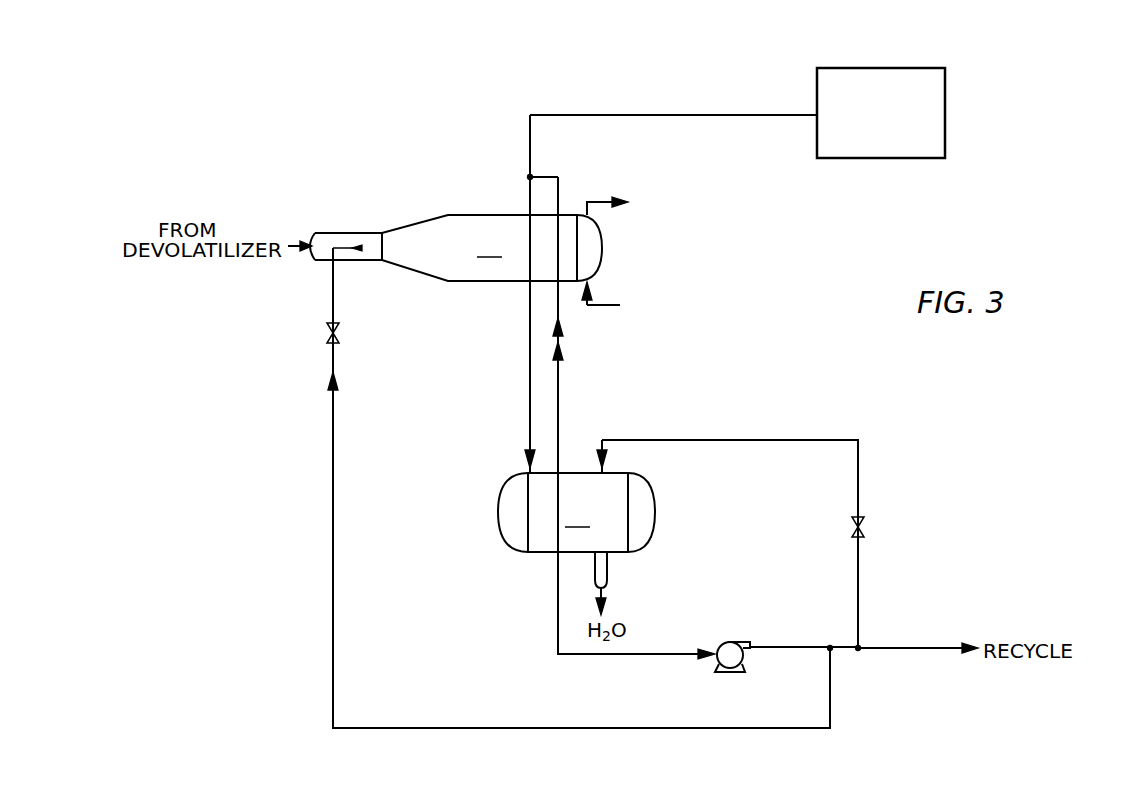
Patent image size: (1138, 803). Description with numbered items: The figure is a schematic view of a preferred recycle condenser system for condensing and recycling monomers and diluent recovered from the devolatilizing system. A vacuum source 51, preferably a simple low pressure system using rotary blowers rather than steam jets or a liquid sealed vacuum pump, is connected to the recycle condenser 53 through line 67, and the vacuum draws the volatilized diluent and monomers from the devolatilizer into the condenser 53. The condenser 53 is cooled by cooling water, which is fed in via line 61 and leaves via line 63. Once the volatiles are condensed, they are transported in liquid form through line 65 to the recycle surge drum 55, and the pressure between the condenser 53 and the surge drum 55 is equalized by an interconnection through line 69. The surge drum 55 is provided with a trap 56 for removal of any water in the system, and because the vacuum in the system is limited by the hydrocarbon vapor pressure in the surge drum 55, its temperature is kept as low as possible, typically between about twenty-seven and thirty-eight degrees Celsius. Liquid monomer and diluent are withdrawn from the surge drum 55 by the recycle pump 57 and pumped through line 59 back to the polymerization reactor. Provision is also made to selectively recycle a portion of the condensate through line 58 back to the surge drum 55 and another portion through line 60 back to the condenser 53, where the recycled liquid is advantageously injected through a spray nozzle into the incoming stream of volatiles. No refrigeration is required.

The vacuum source 51 is at (918, 68).
The recycle condenser 53 is at (456, 248).
The recycle surge drum 55 is at (576, 512).
The trap 56 is at (607, 572).
The recycle pump 57 is at (728, 642).
The line 58 is at (808, 440).
The line 59 is at (912, 650).
The line 60 is at (640, 728).
The line 61 is at (620, 305).
The line 63 is at (596, 202).
The line 65 is at (530, 390).
The line 67 is at (650, 115).
The line 69 is at (558, 413).